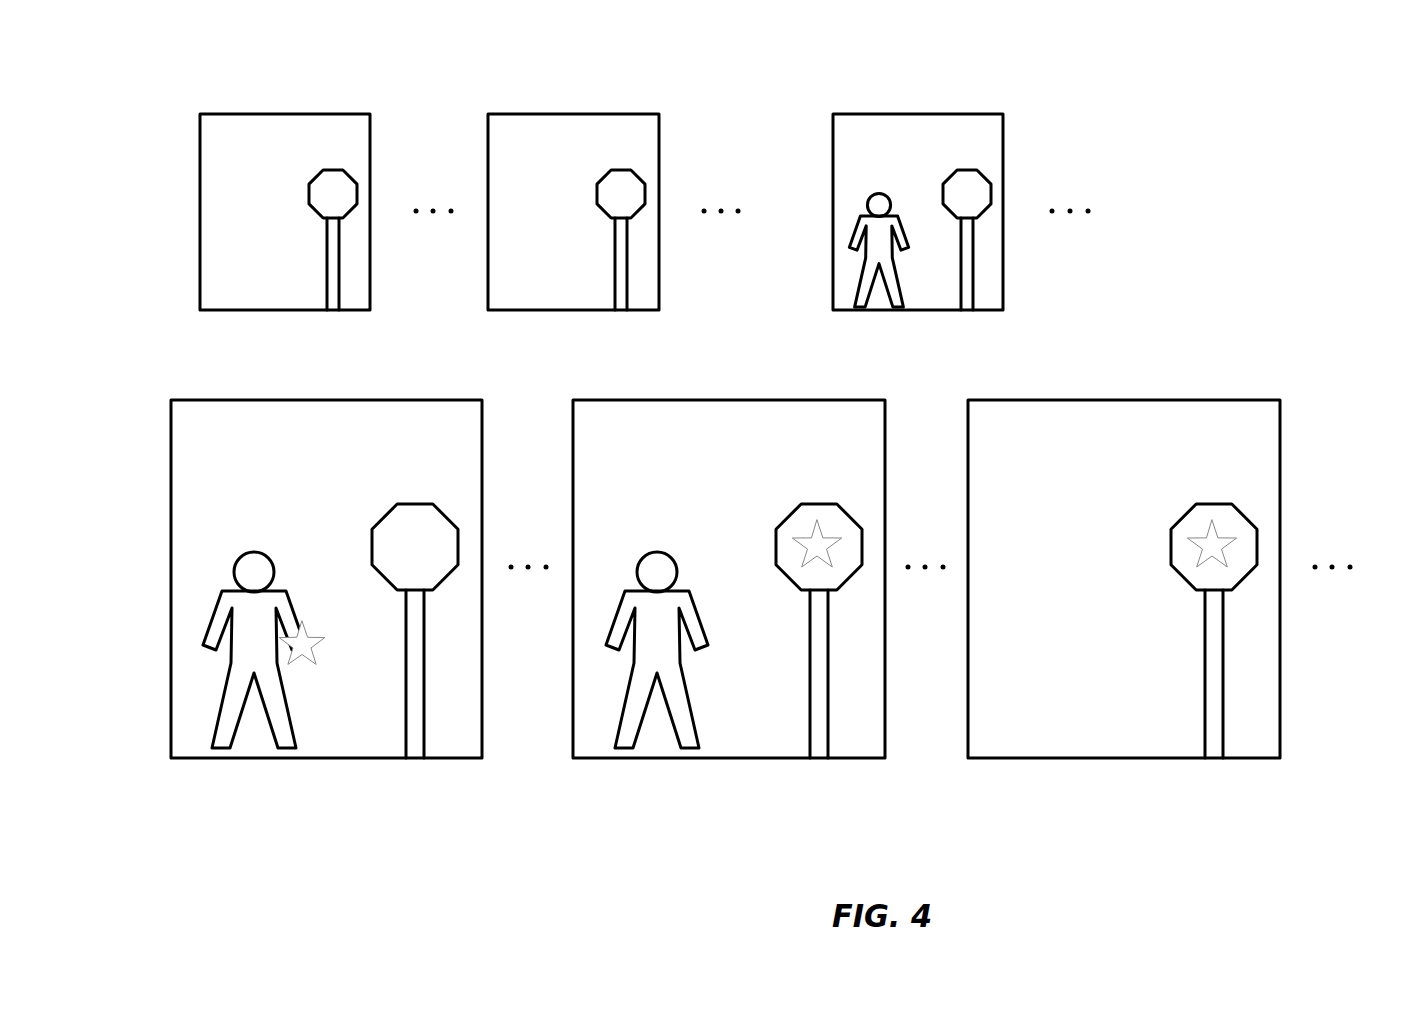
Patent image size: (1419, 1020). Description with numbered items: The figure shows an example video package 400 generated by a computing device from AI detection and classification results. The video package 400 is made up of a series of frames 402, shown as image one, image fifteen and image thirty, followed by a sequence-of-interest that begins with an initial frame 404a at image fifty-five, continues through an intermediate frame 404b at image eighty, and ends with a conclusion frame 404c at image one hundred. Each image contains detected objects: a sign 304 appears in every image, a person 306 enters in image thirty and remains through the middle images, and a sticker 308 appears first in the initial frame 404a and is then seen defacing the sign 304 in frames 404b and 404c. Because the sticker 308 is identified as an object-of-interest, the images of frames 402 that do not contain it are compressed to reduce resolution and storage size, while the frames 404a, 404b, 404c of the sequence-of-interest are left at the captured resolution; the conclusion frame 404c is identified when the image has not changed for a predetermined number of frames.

The video package 400 is at (1279, 39).
The frames 402 is at (238, 114).
The initial frame 404a is at (229, 400).
The frame of sequence-of-interest 404b is at (640, 400).
The conclusion frame 404c is at (1054, 400).
The sign 304 is at (309, 196).
The object 306 is at (851, 246).
The object-of-interest 308 is at (325, 649).